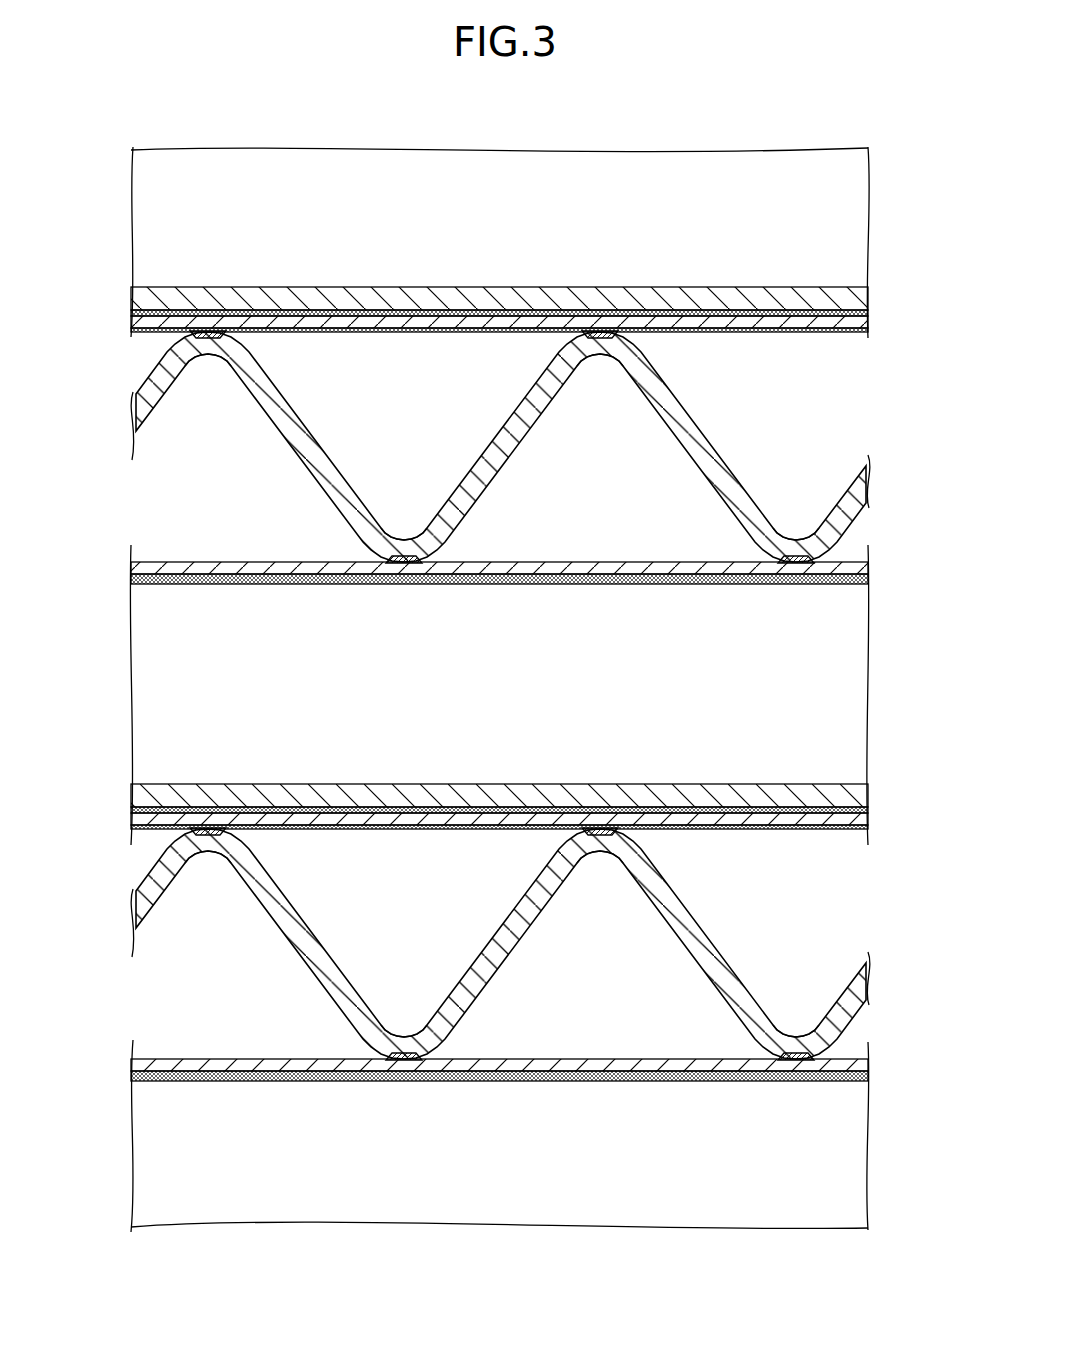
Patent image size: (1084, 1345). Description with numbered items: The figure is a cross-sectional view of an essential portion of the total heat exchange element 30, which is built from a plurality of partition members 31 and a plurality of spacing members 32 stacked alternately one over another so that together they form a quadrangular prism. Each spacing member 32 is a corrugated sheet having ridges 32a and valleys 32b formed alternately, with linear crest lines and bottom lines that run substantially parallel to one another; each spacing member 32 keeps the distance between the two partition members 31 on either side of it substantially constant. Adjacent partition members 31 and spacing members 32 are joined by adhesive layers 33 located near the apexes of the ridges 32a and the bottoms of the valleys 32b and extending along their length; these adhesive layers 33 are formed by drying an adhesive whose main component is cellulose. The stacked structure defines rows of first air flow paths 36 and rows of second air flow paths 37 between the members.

The total heat exchange element 30 is at (173, 112).
The partition member 31 is at (433, 328).
The spacing member 32 is at (343, 287).
The ridge 32a is at (210, 356).
The valley 32b is at (404, 538).
The adhesive layer 33 is at (226, 333).
The first air flow path 36 is at (157, 507).
The second air flow path 37 is at (157, 212).